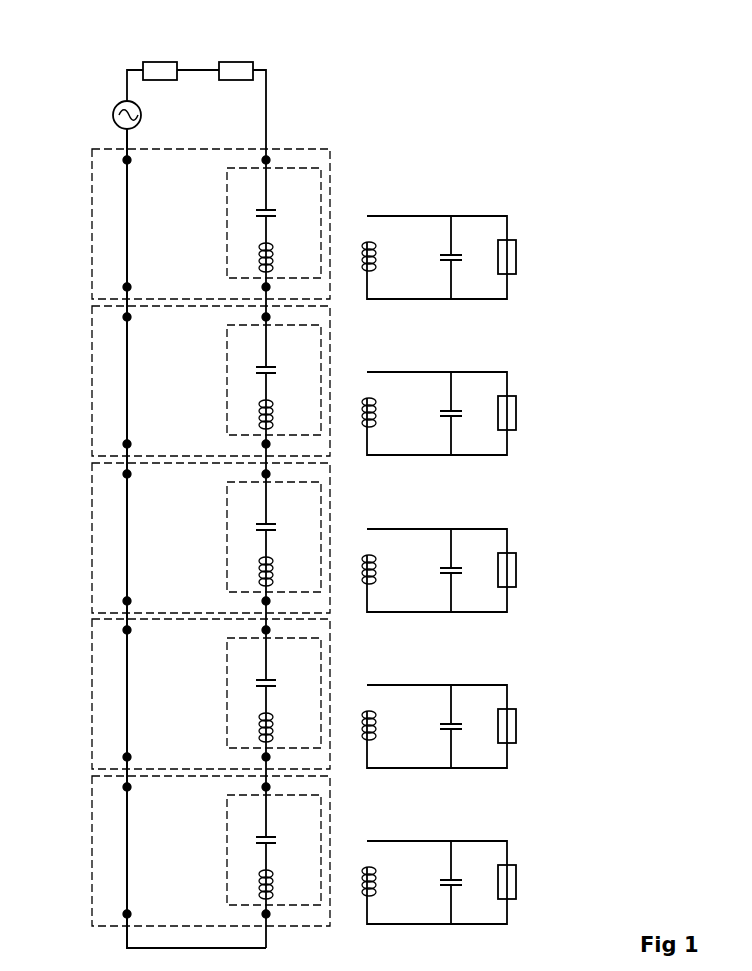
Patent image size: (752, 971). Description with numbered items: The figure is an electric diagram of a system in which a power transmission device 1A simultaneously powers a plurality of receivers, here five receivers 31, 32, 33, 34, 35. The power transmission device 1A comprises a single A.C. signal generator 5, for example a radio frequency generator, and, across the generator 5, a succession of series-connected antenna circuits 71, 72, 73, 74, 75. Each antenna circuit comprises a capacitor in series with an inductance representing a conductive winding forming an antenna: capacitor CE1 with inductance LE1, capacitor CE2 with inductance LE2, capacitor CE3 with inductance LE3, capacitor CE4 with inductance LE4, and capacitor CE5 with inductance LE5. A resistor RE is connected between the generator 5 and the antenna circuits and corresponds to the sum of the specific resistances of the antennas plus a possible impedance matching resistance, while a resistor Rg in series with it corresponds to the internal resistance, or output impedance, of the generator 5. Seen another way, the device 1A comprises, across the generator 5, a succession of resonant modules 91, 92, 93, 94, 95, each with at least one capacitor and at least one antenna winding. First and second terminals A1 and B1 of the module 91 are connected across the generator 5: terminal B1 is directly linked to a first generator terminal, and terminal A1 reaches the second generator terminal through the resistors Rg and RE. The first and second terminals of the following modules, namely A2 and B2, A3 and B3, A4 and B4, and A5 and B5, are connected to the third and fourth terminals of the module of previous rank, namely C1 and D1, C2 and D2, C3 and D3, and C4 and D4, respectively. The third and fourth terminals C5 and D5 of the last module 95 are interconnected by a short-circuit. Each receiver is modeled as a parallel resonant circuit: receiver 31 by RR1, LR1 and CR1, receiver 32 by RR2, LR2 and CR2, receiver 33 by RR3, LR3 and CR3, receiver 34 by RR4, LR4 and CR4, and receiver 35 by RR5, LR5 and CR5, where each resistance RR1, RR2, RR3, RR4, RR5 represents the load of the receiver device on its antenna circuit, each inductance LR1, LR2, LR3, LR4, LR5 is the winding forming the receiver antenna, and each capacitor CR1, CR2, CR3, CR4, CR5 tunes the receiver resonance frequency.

The A.C. signal generator 5 is at (113, 116).
The resistor Rg is at (163, 61).
The resistor RE is at (233, 61).
The power transmission device 1A is at (127, 427).
The resonant module 91 is at (92, 222).
The resonant module 92 is at (92, 336).
The resonant module 93 is at (92, 493).
The resonant module 94 is at (92, 649).
The resonant module 95 is at (92, 806).
The antenna circuit 71 is at (245, 223).
The antenna circuit 72 is at (245, 380).
The antenna circuit 73 is at (245, 537).
The antenna circuit 74 is at (245, 693).
The antenna circuit 75 is at (245, 850).
The receiver 31 is at (496, 227).
The receiver 32 is at (500, 396).
The receiver 33 is at (500, 553).
The receiver 34 is at (500, 709).
The receiver 35 is at (500, 865).
The first terminal A1 is at (266, 160).
The first terminal A2 is at (266, 317).
The first terminal A3 is at (266, 474).
The first terminal A4 is at (266, 630).
The first terminal A5 is at (266, 787).
The second terminal B1 is at (127, 160).
The second terminal B2 is at (127, 317).
The second terminal B3 is at (127, 474).
The second terminal B4 is at (127, 630).
The second terminal B5 is at (127, 787).
The third terminal C1 is at (127, 287).
The third terminal C2 is at (127, 444).
The third terminal C3 is at (127, 601).
The third terminal C4 is at (127, 757).
The third terminal C5 is at (127, 914).
The fourth terminal D1 is at (266, 287).
The fourth terminal D2 is at (266, 444).
The fourth terminal D3 is at (266, 601).
The fourth terminal D4 is at (266, 757).
The fourth terminal D5 is at (266, 914).
The capacitor CE1 is at (276, 210).
The capacitor CE2 is at (276, 367).
The capacitor CE3 is at (276, 524).
The capacitor CE4 is at (276, 680).
The capacitor CE5 is at (276, 837).
The inductance LE1 is at (273, 261).
The inductance LE2 is at (273, 418).
The inductance LE3 is at (273, 575).
The inductance LE4 is at (273, 731).
The inductance LE5 is at (273, 888).
The inductance LR1 is at (364, 244).
The inductance LR2 is at (363, 400).
The inductance LR3 is at (363, 557).
The inductance LR4 is at (363, 713).
The inductance LR5 is at (363, 869).
The capacitor CR1 is at (440, 256).
The capacitor CR2 is at (440, 413).
The capacitor CR3 is at (440, 570).
The capacitor CR4 is at (440, 726).
The capacitor CR5 is at (440, 882).
The resistance RR1 is at (516, 240).
The resistance RR2 is at (516, 397).
The resistance RR3 is at (516, 554).
The resistance RR4 is at (516, 710).
The resistance RR5 is at (516, 866).